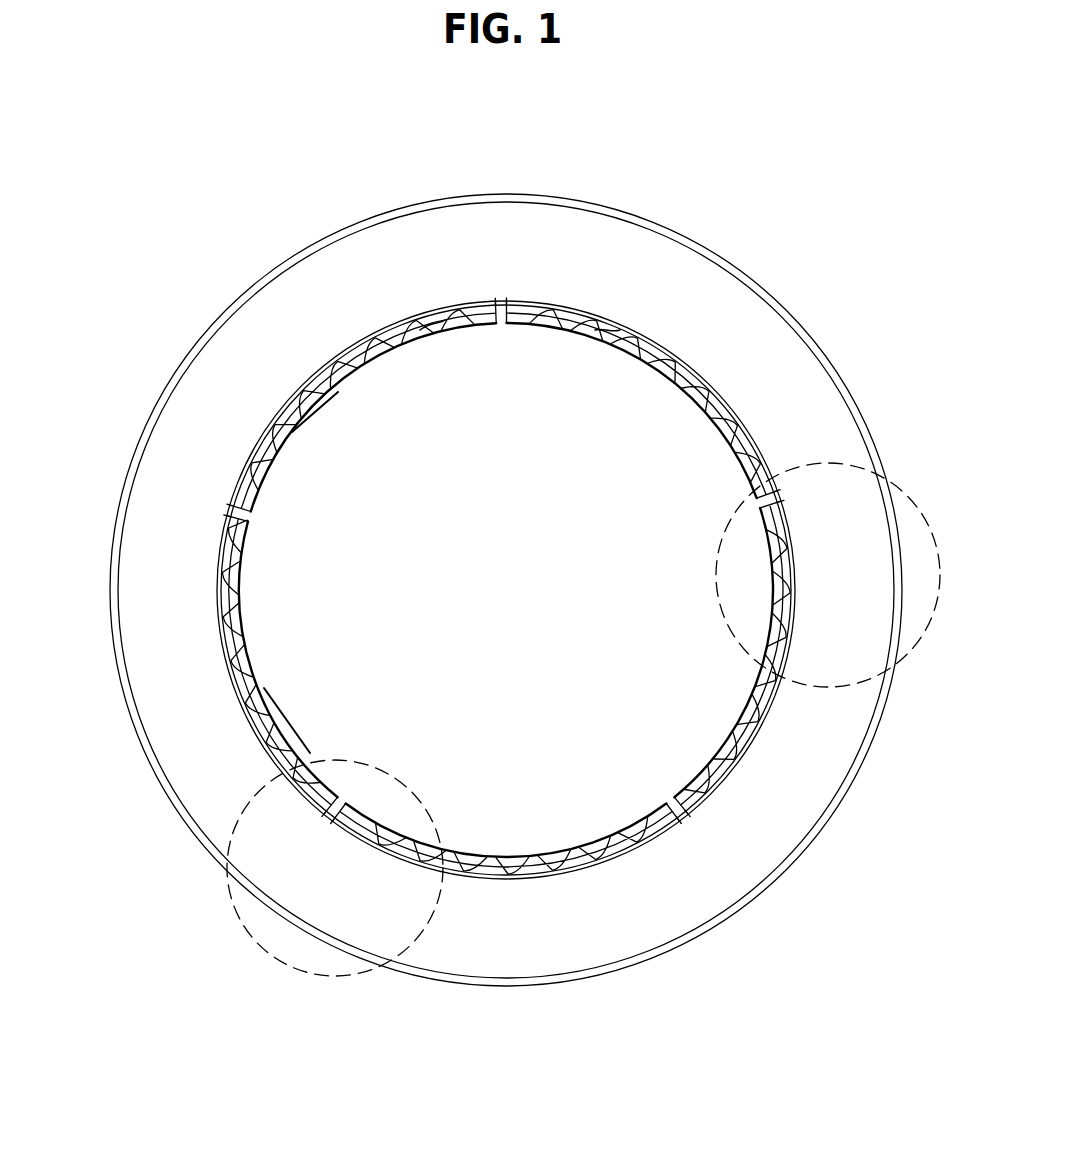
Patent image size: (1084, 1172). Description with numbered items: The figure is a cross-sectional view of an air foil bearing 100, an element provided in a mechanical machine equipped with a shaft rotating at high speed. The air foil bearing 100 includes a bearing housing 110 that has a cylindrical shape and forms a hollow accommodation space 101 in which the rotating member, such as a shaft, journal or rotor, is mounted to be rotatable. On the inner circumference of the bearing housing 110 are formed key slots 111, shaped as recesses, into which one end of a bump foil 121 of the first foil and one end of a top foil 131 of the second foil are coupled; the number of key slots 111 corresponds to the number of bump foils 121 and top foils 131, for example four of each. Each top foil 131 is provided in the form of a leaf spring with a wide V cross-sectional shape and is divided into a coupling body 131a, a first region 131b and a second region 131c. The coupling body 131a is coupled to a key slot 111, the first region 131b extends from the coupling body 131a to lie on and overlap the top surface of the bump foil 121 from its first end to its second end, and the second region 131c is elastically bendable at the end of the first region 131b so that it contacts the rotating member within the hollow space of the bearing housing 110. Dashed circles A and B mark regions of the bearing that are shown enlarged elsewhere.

The air foil bearing 100 is at (166, 116).
The bearing housing 110 is at (278, 305).
The inner hole 101 is at (325, 548).
The key slot 111 is at (499, 302).
The bump foil 121 is at (428, 326).
The top foil 131 is at (405, 326).
The coupling body 131a is at (683, 817).
The first region 131b is at (497, 858).
The second region 131c is at (300, 744).
The detail region A is at (856, 465).
The detail region B is at (228, 890).